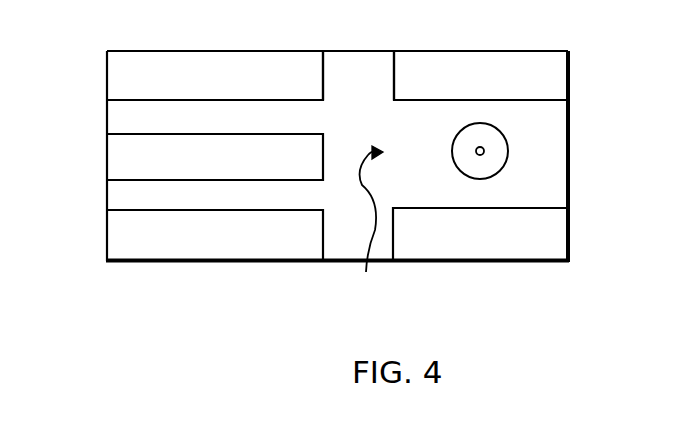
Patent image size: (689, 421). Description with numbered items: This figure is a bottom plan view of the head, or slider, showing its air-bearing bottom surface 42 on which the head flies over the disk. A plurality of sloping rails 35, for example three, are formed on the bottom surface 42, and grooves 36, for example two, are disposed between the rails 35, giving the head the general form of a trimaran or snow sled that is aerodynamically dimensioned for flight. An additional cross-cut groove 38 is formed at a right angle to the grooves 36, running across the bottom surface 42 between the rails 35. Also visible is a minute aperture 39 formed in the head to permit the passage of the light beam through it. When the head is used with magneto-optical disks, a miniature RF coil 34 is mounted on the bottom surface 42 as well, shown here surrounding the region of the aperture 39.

The miniature RF coil 34 is at (505, 165).
The sloping rails 35 is at (203, 68).
The grooves 36 is at (118, 117).
The cross-cut groove 38 is at (364, 80).
The minute aperture 39 is at (484, 148).
The bottom surface 42 is at (365, 223).